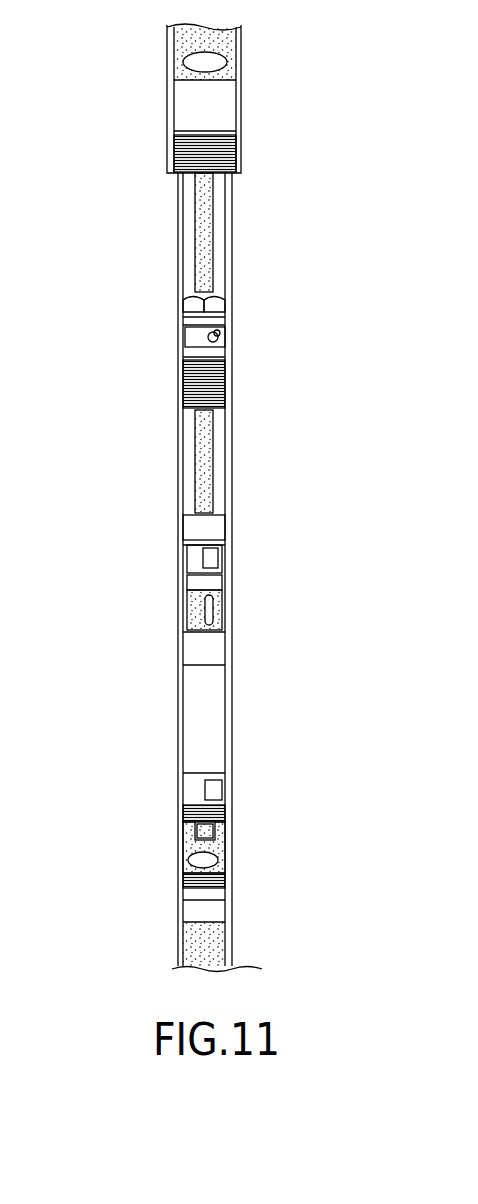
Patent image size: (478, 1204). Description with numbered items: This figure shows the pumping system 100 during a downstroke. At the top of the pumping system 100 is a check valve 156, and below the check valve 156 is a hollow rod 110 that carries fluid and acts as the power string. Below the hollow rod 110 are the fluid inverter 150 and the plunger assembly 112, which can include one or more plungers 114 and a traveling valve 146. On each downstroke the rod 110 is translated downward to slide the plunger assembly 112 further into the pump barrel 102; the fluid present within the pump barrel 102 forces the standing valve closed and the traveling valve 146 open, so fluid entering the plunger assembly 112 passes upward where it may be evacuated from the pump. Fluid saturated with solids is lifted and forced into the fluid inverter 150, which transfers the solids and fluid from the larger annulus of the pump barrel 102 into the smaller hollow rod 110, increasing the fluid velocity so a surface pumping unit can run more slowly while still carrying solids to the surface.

The pumping system 100 is at (70, 93).
The check valve 156 is at (242, 97).
The hollow rod 110 is at (195, 203).
The pump barrel 102 is at (178, 258).
The plunger assembly 112 is at (238, 923).
The fluid inverter 150 is at (205, 610).
The plunger 114 is at (170, 632).
The traveling valve 146 is at (178, 860).